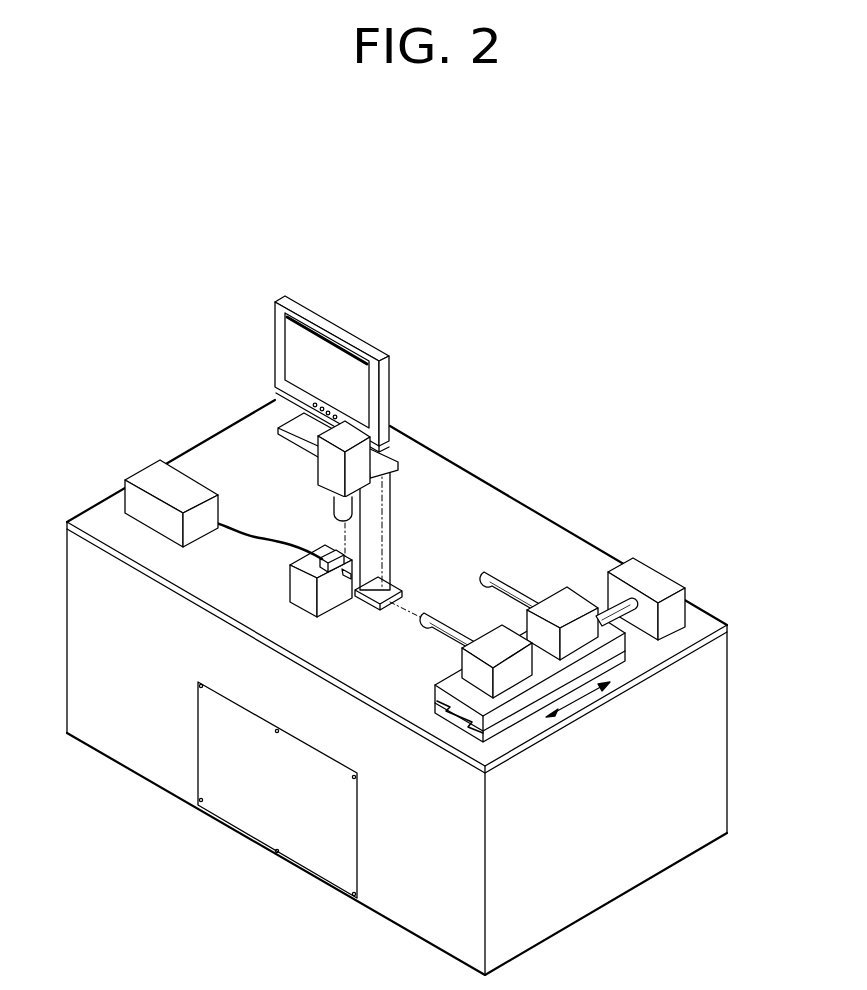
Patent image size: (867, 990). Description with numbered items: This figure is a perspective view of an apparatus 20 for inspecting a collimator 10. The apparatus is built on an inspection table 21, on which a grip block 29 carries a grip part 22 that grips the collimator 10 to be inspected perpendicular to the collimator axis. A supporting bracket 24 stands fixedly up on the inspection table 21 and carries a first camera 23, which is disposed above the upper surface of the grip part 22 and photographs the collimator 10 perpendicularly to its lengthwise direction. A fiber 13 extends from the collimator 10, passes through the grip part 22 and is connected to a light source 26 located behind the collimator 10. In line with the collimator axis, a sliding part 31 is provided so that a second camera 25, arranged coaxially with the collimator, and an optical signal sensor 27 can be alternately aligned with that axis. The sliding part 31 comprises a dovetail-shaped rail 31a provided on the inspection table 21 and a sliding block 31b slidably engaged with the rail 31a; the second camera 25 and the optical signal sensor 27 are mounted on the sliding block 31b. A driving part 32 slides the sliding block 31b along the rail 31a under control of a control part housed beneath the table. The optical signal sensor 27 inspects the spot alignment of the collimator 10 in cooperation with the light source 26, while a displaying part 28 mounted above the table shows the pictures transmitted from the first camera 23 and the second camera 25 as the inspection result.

The collimator 10 is at (350, 580).
The fiber 13 is at (250, 530).
The apparatus for inspecting the collimator 20 is at (434, 622).
The inspection table 21 is at (722, 752).
The grip part 22 is at (332, 577).
The first camera 23 is at (328, 508).
The supporting bracket 24 is at (390, 514).
The second camera 25 is at (443, 640).
The light source 26 is at (158, 520).
The optical signal sensor 27 is at (510, 587).
The displaying part 28 is at (328, 325).
The grip block 29 is at (297, 600).
The sliding part 31 is at (537, 724).
The rail 31a is at (500, 723).
The sliding block 31b is at (562, 677).
The driving part 32 is at (657, 573).